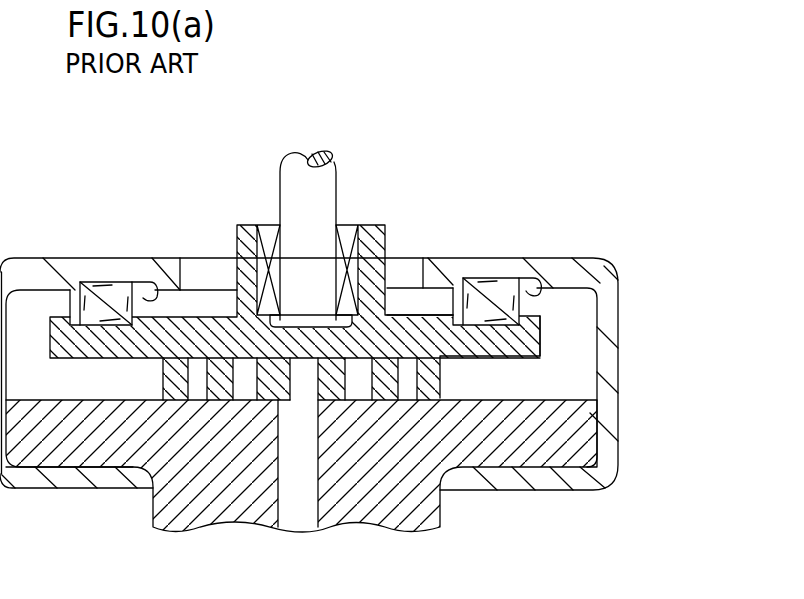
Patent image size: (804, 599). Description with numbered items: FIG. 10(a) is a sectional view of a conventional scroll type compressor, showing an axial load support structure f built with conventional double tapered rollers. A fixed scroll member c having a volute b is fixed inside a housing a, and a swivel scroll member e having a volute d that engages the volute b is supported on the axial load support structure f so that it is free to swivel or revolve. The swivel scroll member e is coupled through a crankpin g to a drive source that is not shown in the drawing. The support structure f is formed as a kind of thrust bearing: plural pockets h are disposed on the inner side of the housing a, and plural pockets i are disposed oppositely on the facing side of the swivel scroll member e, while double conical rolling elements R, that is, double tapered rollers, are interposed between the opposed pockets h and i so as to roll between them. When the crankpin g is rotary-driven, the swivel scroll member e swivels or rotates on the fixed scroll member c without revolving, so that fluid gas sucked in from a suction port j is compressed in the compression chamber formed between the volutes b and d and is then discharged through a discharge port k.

The housing a is at (34, 263).
The volute b is at (443, 379).
The fixed scroll member c is at (443, 510).
The volute d is at (165, 382).
The swivel scroll member e is at (405, 303).
The axial load support structure f is at (558, 309).
The crankpin g is at (321, 202).
The pocket h is at (163, 280).
The pocket i is at (72, 288).
The suction port j is at (200, 268).
The discharge port k is at (300, 505).
The double conical rolling element R is at (118, 280).